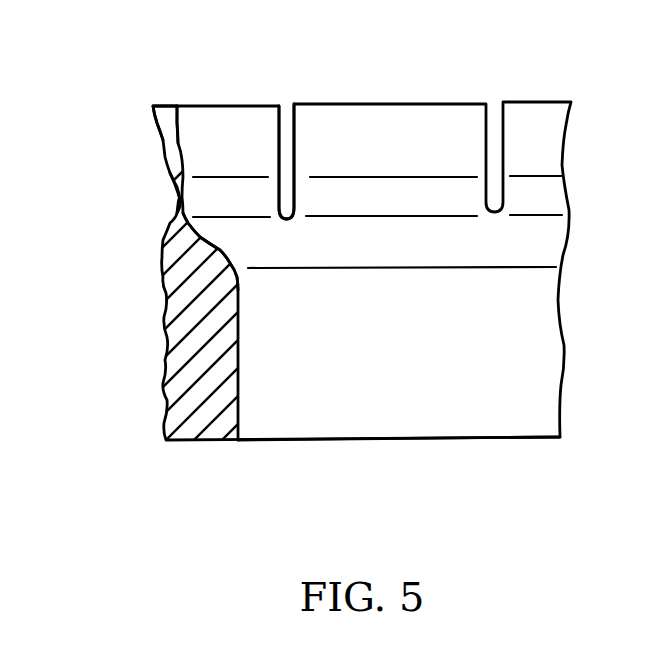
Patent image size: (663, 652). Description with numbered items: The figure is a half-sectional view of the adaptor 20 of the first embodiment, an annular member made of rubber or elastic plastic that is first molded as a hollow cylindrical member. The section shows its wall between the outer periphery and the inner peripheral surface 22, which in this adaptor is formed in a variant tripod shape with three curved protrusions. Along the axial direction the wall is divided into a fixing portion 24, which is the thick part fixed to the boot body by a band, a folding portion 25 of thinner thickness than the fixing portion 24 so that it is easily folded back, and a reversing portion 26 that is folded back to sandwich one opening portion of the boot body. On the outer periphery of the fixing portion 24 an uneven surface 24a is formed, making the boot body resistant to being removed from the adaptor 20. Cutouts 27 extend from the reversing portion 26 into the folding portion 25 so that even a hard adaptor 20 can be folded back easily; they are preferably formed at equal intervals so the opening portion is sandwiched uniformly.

The adaptor 20 is at (447, 101).
The inner peripheral surface 22 is at (358, 413).
The fixing portion 24 is at (165, 350).
The uneven surface 24a is at (162, 300).
The folding portion 25 is at (165, 200).
The reversing portion 26 is at (162, 137).
The cutouts 27 is at (287, 103).